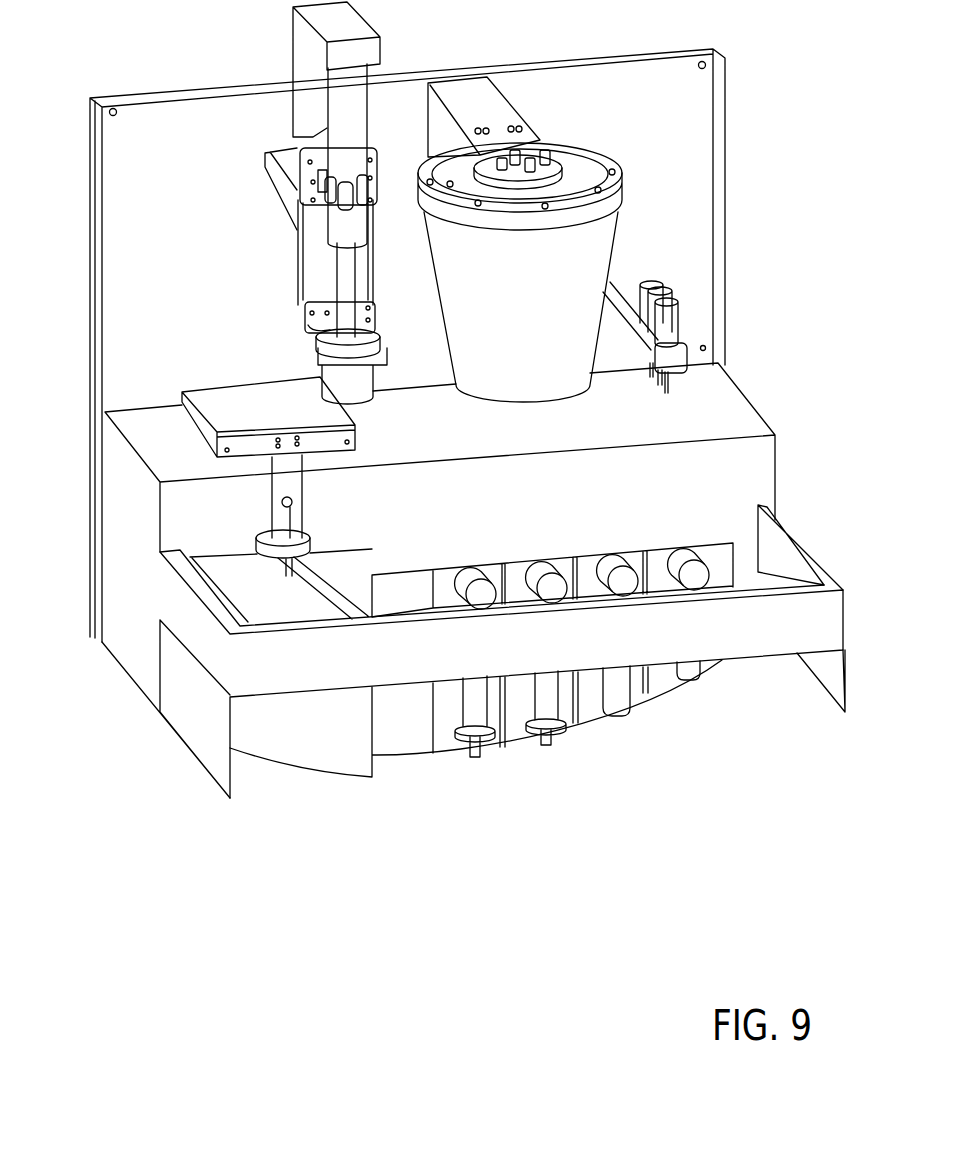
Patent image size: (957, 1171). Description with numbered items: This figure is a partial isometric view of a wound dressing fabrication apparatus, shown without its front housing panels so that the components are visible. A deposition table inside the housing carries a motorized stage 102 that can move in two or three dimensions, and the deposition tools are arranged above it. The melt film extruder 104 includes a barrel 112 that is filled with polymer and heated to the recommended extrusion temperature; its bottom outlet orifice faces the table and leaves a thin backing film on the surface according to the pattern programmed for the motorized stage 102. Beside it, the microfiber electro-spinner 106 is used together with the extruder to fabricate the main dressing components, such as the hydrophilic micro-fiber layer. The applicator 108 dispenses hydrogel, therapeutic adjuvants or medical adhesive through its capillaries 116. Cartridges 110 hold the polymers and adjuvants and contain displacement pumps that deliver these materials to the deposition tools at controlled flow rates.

The motorized stage 102 is at (285, 477).
The melt film extruder 104 is at (347, 122).
The electro-spinner 106 is at (556, 247).
The applicator 108 is at (672, 320).
The cartridges 110 is at (688, 677).
The barrel 112 is at (337, 373).
The capillaries 116 is at (670, 392).